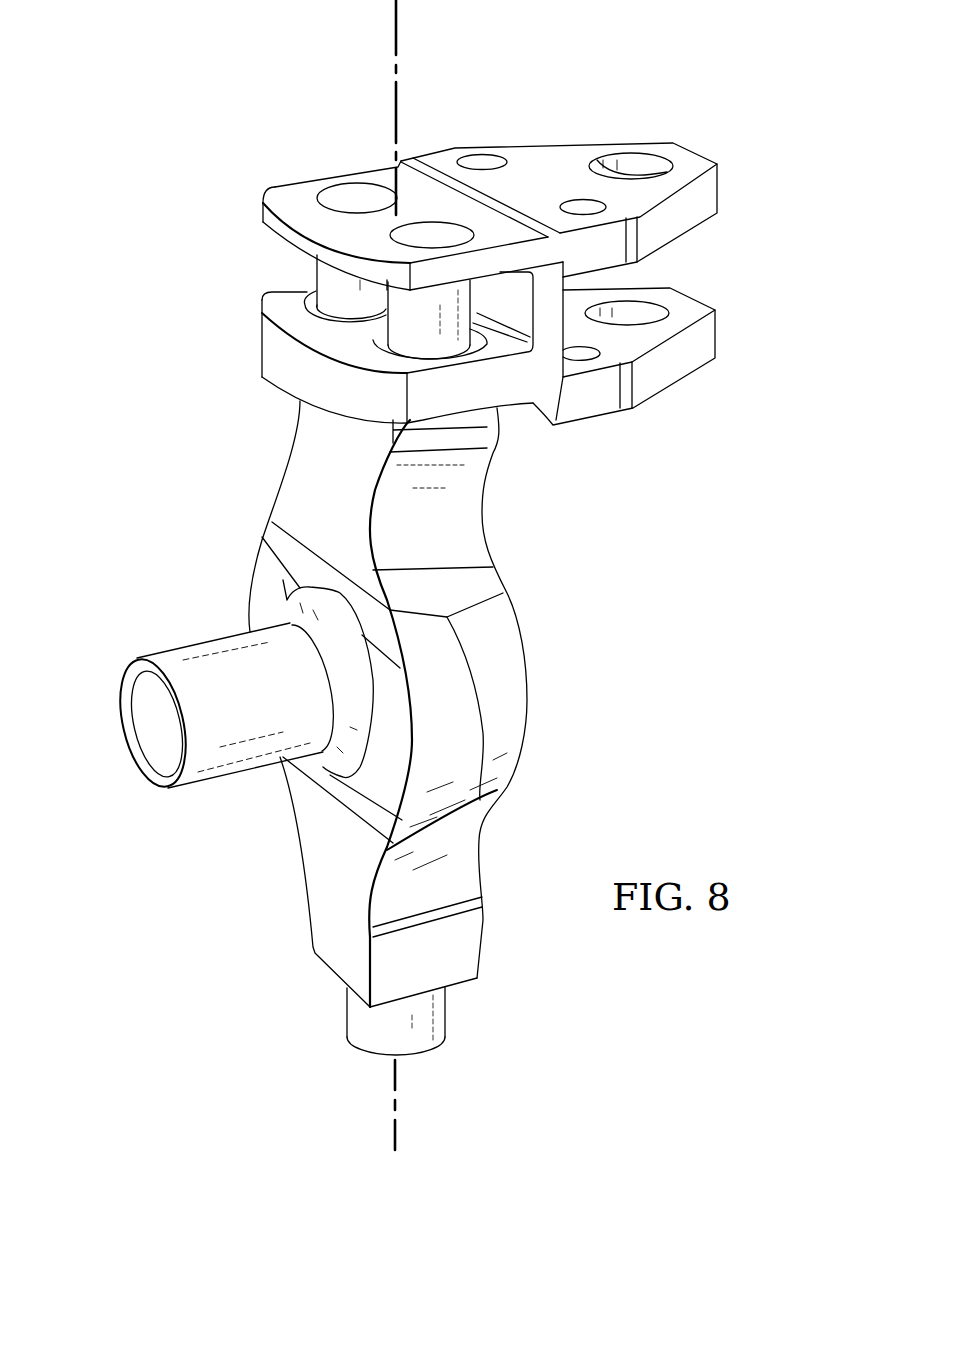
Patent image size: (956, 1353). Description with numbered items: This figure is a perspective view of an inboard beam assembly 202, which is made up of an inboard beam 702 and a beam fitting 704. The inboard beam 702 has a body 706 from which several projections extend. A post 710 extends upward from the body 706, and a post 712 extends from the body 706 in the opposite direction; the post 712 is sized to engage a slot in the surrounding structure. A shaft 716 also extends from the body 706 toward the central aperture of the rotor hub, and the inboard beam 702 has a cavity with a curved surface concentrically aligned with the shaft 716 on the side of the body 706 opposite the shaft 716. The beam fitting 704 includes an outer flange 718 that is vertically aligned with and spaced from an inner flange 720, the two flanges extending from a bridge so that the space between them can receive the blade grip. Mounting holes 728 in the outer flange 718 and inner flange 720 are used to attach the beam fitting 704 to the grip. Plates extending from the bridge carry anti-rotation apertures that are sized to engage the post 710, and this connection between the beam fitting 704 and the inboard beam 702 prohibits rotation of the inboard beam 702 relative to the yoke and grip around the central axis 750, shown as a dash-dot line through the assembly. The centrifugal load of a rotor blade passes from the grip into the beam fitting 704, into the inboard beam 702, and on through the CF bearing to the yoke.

The inboard beam assembly 202 is at (176, 86).
The inboard beam 702 is at (583, 569).
The beam fitting 704 is at (594, 86).
The body 706 is at (520, 717).
The post 710 is at (347, 197).
The post 712 is at (410, 234).
The shaft 716 is at (202, 642).
The outer flange 718 is at (720, 187).
The inner flange 720 is at (717, 337).
The mounting holes 728 is at (478, 167).
The central axis 750 is at (393, 26).